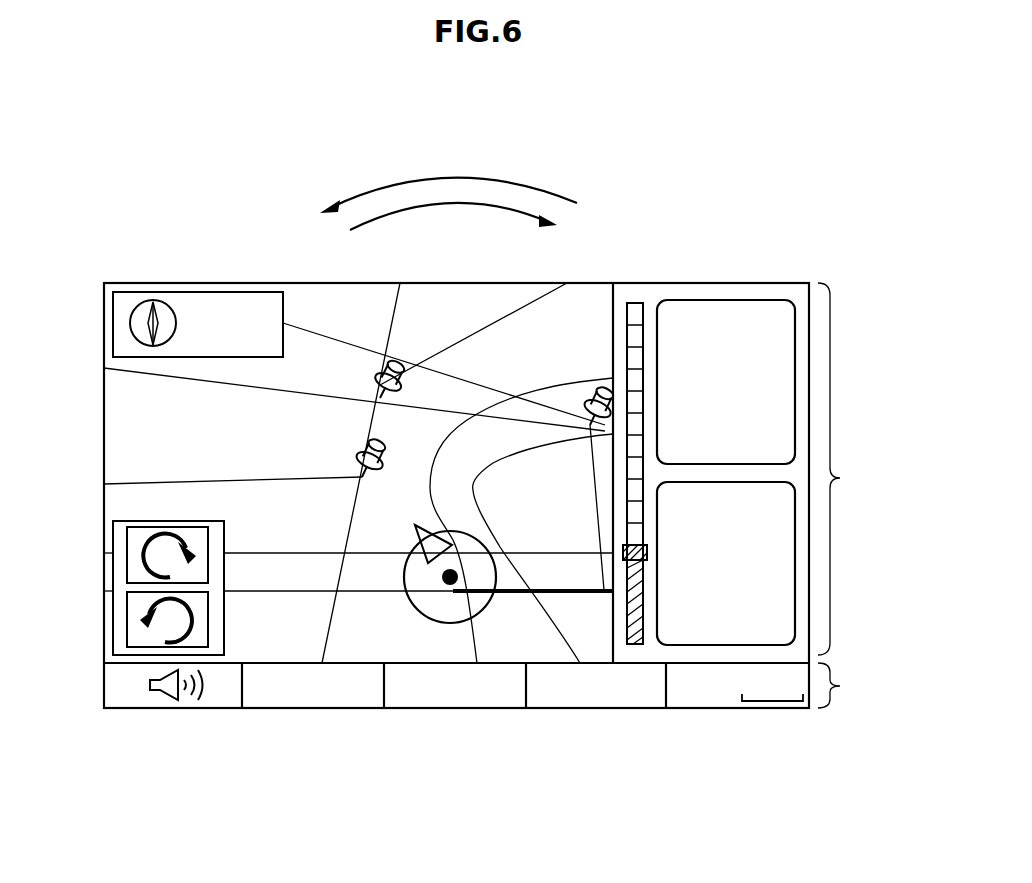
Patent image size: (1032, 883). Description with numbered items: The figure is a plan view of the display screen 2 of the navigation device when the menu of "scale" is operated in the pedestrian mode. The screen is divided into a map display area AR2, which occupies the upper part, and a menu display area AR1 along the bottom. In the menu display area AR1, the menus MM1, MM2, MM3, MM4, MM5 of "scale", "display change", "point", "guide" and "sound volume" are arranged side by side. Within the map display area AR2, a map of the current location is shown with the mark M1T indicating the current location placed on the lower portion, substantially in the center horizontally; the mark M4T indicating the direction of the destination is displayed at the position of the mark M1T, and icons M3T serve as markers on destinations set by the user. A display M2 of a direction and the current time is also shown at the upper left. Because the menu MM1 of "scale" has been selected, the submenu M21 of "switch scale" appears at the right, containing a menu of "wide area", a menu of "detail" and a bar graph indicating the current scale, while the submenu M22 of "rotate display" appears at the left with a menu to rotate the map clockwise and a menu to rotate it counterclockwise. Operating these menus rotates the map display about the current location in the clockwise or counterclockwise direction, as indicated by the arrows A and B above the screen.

The display screen 2 is at (643, 283).
The display of direction and current time M2 is at (113, 318).
The submenu of switch scale M21 is at (736, 283).
The submenu of rotate display M22 is at (113, 533).
The icon M3T is at (402, 350).
The mark indicating direction of destination M4T is at (422, 547).
The mark indicating current location M1T is at (408, 597).
The menu of scale MM1 is at (699, 709).
The menu of display change MM2 is at (552, 709).
The menu of point MM3 is at (455, 709).
The menu of guide MM4 is at (280, 709).
The menu of sound volume MM5 is at (165, 709).
The menu display area AR1 is at (856, 685).
The map display area AR2 is at (856, 469).
The arrow A is at (477, 208).
The arrow B is at (522, 183).